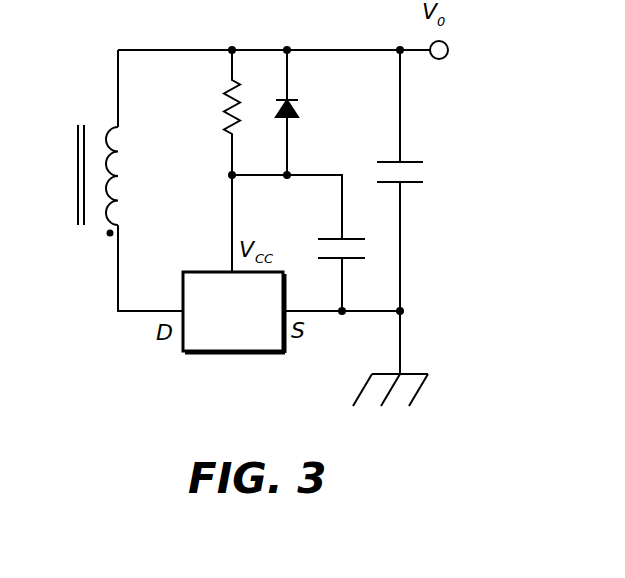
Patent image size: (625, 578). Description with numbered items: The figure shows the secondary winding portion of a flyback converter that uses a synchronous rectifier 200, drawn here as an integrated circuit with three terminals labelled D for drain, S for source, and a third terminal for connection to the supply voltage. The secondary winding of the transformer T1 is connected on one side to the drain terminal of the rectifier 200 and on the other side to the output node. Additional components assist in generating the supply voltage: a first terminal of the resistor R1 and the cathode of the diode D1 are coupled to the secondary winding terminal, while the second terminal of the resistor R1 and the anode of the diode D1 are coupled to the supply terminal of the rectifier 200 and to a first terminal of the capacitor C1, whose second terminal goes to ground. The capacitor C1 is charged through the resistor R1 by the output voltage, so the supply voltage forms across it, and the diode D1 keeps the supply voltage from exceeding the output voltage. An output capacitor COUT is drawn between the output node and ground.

The rectifier 200 is at (250, 325).
The transformer T1 is at (121, 180).
The resistor R1 is at (213, 161).
The diode D1 is at (301, 112).
The capacitor C1 is at (352, 259).
The output capacitor COUT is at (429, 180).